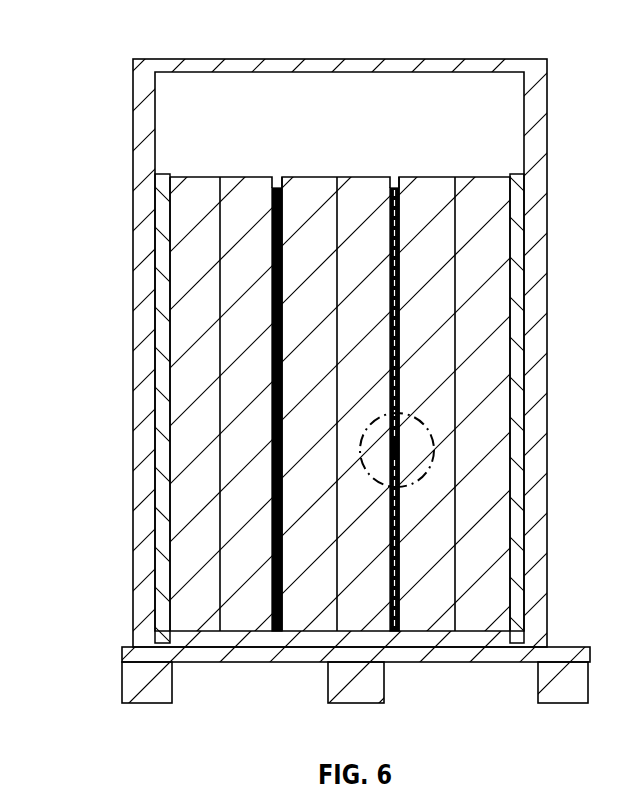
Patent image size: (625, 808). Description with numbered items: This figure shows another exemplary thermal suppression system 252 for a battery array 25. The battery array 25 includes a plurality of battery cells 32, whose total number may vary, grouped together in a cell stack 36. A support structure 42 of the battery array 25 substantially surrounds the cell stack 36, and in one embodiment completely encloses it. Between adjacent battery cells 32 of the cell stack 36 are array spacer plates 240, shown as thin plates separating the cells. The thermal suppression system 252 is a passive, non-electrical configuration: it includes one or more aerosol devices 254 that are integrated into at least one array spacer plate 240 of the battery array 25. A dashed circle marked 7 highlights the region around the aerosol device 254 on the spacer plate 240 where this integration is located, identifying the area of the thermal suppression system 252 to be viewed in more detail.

The battery array 25 is at (525, 36).
The support structure 42 is at (113, 82).
The cell stack 36 is at (339, 161).
The battery cell 32 is at (190, 618).
The array spacer plate 240 is at (283, 518).
The thermal suppression system 252 is at (399, 169).
The detail view callout 7 is at (427, 427).
The aerosol device 254 is at (411, 454).